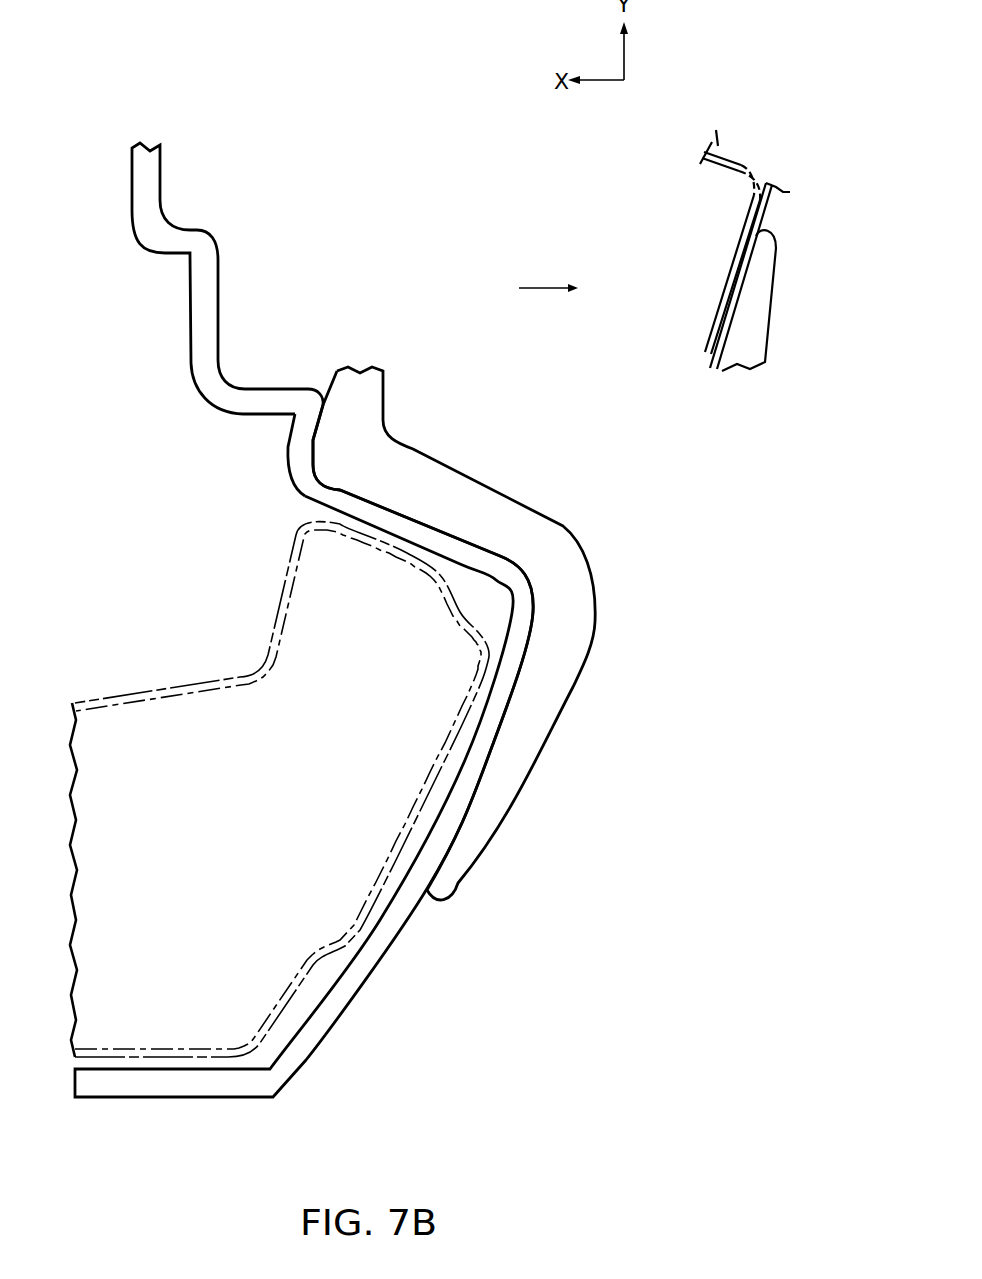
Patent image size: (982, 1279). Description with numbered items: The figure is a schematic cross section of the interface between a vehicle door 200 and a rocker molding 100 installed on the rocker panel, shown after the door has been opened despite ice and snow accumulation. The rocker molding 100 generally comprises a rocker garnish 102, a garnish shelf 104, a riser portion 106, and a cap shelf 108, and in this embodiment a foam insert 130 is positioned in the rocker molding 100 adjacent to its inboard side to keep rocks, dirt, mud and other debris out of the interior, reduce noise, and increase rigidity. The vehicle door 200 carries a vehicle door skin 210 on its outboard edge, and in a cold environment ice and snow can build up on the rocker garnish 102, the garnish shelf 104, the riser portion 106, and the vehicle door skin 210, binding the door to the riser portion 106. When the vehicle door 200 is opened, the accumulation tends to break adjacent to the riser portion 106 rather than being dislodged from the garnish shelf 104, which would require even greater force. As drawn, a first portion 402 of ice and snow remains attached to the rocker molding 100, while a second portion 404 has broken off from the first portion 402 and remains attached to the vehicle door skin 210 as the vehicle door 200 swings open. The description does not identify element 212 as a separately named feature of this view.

The rocker molding 100 is at (357, 1030).
The rocker garnish 102 is at (395, 921).
The garnish shelf 104 is at (412, 538).
The riser portion 106 is at (298, 432).
The cap shelf 108 is at (262, 393).
The foam insert 130 is at (292, 627).
The vehicle door 200 is at (757, 145).
The vehicle door skin 210 is at (745, 287).
The second layer 212 is at (728, 305).
The first portion of ice and/or snow accumulation 402 is at (562, 538).
The second portion of ice and/or snow accumulation 404 is at (752, 337).